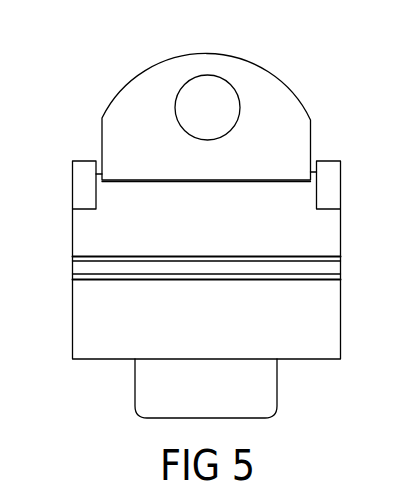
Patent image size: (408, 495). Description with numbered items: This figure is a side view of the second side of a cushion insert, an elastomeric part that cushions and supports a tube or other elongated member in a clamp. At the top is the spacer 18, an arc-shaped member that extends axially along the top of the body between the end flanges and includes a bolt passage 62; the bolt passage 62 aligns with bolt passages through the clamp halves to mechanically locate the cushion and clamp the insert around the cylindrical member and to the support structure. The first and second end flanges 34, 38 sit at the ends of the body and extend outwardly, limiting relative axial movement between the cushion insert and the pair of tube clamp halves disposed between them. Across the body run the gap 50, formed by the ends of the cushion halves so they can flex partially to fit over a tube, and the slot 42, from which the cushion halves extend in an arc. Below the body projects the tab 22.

The spacer 18 is at (282, 108).
The bolt passage 62 is at (207, 108).
The second end flange 38 is at (86, 172).
The first end flange 34 is at (327, 173).
The gap 50 is at (333, 259).
The slot 42 is at (332, 268).
The tab 22 is at (265, 384).